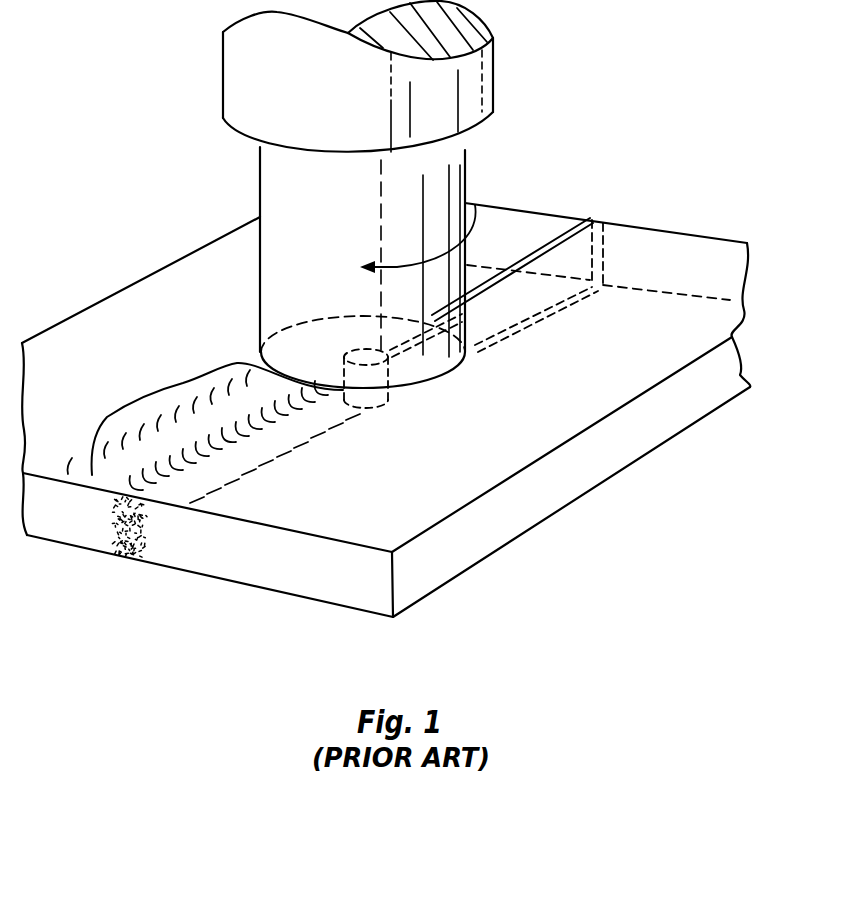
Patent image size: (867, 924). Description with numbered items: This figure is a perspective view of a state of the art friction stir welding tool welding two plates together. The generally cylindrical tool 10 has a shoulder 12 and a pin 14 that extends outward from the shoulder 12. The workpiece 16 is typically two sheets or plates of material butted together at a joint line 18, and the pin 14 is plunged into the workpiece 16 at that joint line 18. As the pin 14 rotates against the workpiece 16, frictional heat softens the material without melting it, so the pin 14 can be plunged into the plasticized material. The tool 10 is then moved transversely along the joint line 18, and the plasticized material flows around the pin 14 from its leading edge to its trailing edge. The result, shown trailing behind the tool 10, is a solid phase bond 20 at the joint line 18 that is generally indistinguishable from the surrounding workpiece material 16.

The tool 10 is at (406, 206).
The shoulder 12 is at (442, 362).
The pin 14 is at (408, 388).
The workpiece 16 is at (660, 252).
The joint line 18 is at (593, 217).
The solid phase bond 20 is at (157, 393).